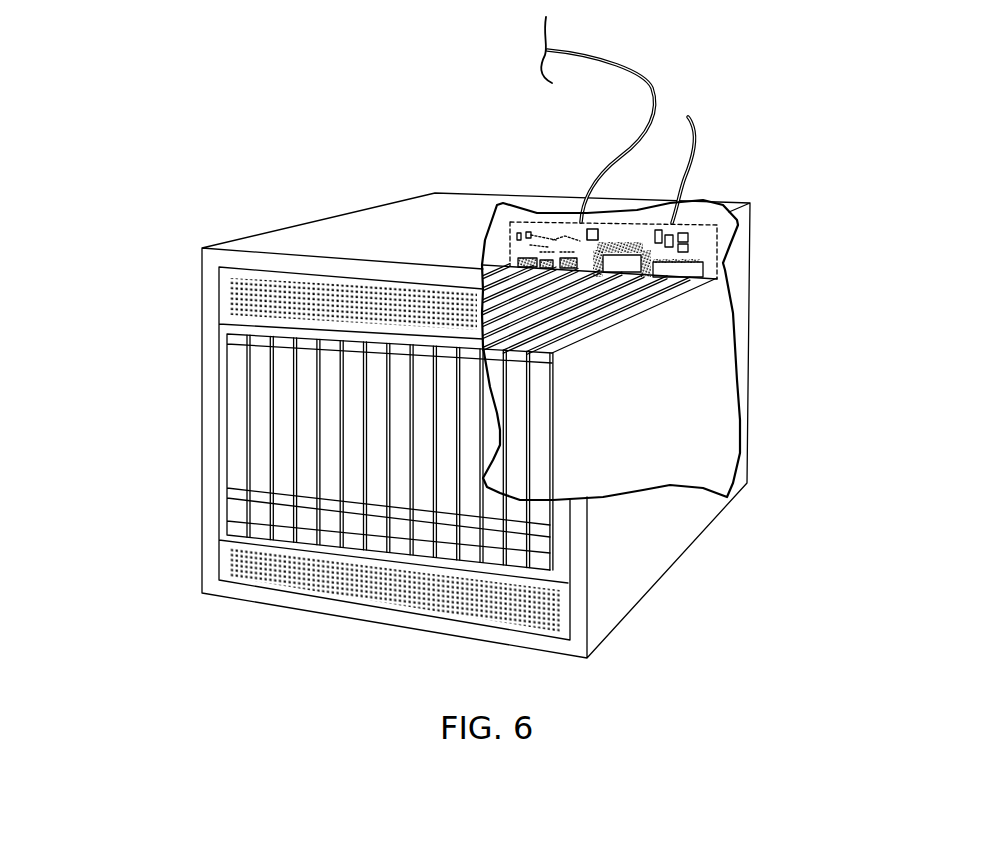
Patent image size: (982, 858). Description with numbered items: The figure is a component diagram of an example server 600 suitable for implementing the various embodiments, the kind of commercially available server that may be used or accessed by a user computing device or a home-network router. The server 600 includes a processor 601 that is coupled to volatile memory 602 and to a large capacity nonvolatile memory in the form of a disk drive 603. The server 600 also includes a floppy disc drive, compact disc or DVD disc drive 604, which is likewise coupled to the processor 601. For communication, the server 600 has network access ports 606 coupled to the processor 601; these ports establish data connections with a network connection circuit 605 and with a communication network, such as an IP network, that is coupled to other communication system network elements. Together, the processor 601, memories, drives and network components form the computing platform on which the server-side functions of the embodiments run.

The server 600 is at (206, 154).
The processor 601 is at (587, 230).
The volatile memory 602 is at (703, 275).
The disk drive 603 is at (282, 388).
The disc drive 604 is at (257, 448).
The network connection circuit 605 is at (515, 256).
The network access ports 606 is at (627, 72).